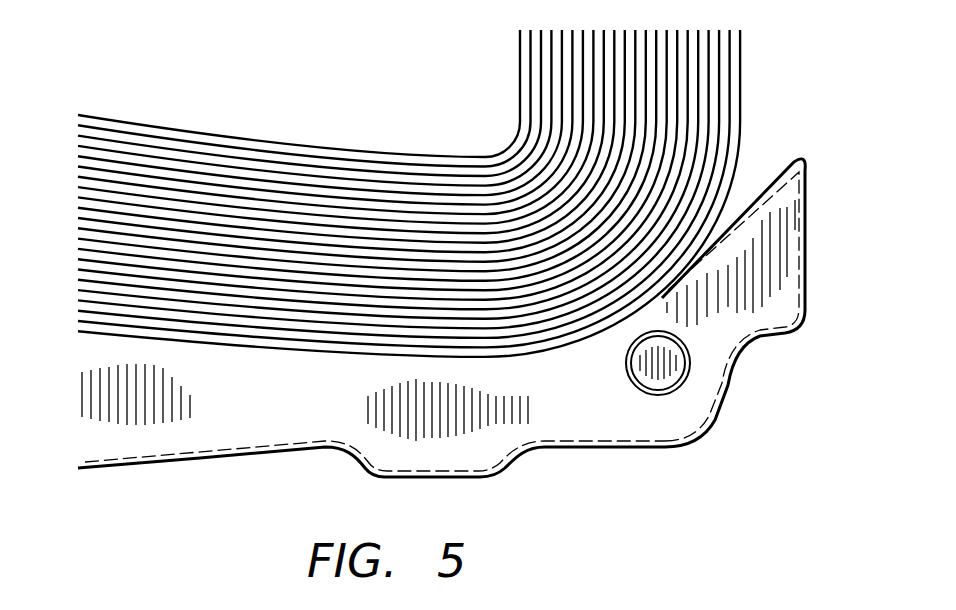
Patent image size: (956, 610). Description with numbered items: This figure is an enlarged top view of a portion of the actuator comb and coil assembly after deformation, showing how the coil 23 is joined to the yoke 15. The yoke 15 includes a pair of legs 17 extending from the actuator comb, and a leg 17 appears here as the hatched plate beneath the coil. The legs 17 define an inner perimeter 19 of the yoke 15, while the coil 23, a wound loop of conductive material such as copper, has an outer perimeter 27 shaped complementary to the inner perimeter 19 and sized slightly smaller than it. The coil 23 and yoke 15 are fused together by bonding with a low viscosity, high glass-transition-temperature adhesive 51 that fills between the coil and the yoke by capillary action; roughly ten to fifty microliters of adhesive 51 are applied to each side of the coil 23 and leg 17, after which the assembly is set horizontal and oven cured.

The yoke 15 is at (726, 490).
The legs 17 is at (150, 440).
The inner perimeter 19 is at (486, 358).
The coil 23 is at (307, 168).
The outer perimeter 27 is at (527, 362).
The adhesive 51 is at (578, 340).